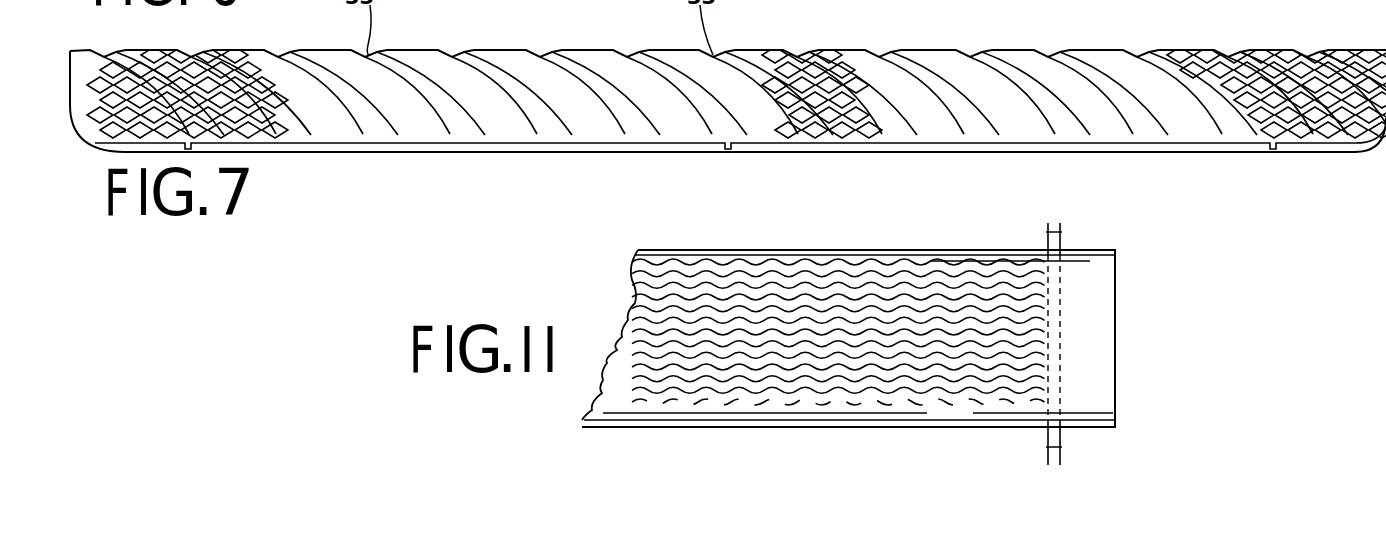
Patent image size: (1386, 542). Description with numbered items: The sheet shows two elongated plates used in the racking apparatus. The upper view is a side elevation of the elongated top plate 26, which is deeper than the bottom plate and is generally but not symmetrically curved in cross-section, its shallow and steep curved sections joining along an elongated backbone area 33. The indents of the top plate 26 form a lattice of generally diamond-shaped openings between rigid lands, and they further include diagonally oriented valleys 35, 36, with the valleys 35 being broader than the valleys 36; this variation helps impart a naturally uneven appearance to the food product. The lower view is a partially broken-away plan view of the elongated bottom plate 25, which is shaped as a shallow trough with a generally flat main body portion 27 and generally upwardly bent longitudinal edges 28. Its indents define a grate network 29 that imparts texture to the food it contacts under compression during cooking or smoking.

In FIG. 11, the elongated bottom plate 25 is at (630, 308).
In FIG. 7, the elongated top plate 26 is at (945, 55).
In FIG. 11, the main body portion 27 is at (1092, 330).
In FIG. 11, the longitudinal edges 28 is at (1085, 253).
In FIG. 11, the grate network 29 is at (827, 287).
In FIG. 7, the backbone area 33 is at (598, 55).
In FIG. 7, the valleys 35 is at (1057, 57).
In FIG. 7, the valleys 36 is at (453, 55).